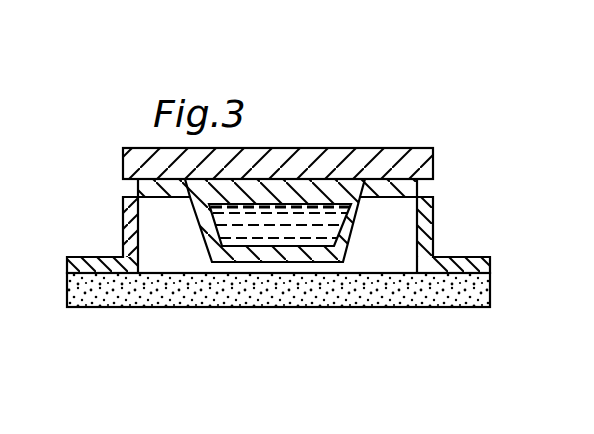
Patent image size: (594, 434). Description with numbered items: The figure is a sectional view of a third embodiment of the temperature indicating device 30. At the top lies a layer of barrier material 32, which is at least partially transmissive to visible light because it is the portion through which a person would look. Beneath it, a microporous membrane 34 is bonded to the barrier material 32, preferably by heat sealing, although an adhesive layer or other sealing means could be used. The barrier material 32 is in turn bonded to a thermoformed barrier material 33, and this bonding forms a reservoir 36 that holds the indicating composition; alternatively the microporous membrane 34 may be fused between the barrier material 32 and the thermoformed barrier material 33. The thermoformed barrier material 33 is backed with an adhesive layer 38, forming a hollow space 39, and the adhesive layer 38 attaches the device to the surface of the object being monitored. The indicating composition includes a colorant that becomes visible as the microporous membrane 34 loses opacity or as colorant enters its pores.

The temperature indicating device 30 is at (356, 124).
The layer of barrier material 32 is at (403, 147).
The thermoformed barrier material 33 is at (431, 218).
The microporous membrane 34 is at (293, 189).
The reservoir 36 is at (353, 236).
The adhesive layer 38 is at (488, 290).
The hollow space 39 is at (160, 234).